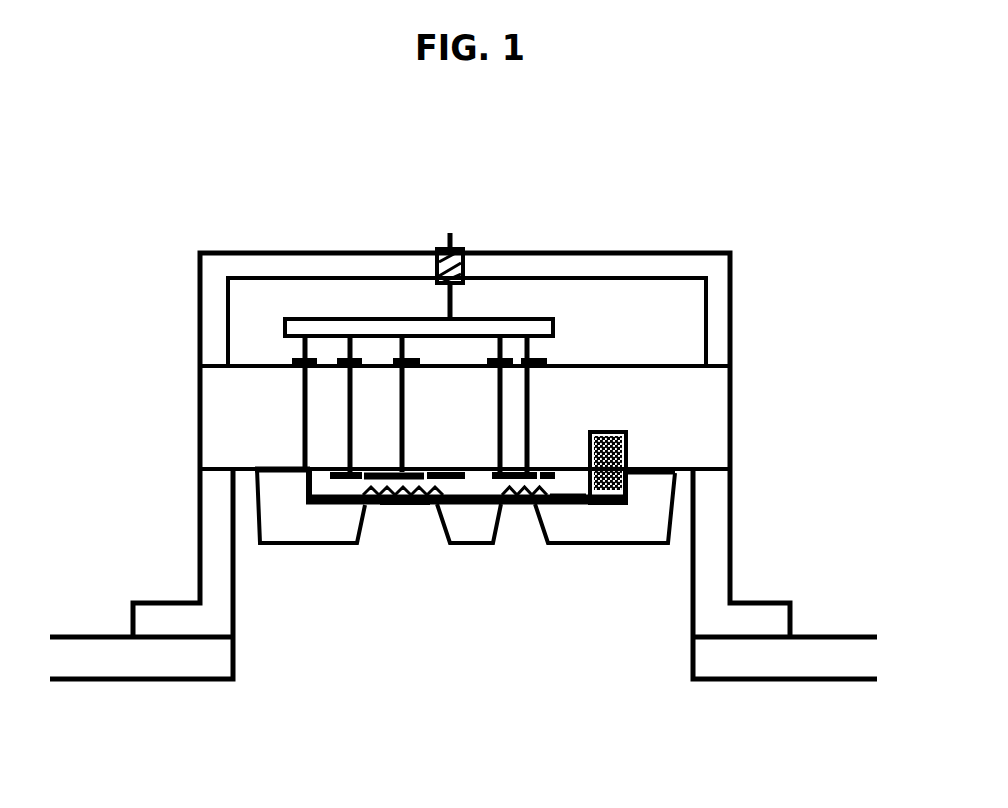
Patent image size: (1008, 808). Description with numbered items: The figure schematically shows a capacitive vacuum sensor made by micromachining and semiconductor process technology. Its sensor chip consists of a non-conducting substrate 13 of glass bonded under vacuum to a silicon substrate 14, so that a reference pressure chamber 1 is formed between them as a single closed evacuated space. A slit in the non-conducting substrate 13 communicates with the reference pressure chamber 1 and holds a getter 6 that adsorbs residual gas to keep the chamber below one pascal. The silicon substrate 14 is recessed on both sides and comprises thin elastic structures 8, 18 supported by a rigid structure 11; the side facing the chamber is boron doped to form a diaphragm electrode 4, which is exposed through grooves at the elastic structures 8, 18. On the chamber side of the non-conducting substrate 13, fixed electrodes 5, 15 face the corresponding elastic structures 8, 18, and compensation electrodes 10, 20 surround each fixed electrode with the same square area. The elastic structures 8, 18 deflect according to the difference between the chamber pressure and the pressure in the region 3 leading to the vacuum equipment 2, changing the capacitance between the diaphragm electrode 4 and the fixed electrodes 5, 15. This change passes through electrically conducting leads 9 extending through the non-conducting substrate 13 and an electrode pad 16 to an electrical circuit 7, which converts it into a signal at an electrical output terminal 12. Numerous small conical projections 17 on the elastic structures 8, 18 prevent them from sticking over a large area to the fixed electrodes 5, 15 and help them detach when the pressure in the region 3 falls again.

The reference pressure chamber 1 is at (562, 488).
The vacuum equipment 2 is at (175, 667).
The region leading to vacuum equipment 3 is at (420, 550).
The diaphragm electrode 4 is at (333, 505).
The fixed electrode 5 is at (533, 467).
The getter 6 is at (617, 453).
The electrical circuit 7 is at (523, 328).
The elastic structure 8 is at (526, 507).
The electrically conducting leads 9 is at (300, 413).
The compensation electrode 10 is at (558, 467).
The rigid structure 11 is at (648, 527).
The electrical output terminal 12 is at (452, 234).
The non-conducting substrate 13 is at (703, 388).
The silicon substrate 14 is at (605, 527).
The fixed electrode 15 is at (410, 467).
The electrode pad 16 is at (287, 360).
The projections 17 is at (517, 507).
The elastic structure 18 is at (397, 508).
The compensation electrode 20 is at (332, 470).